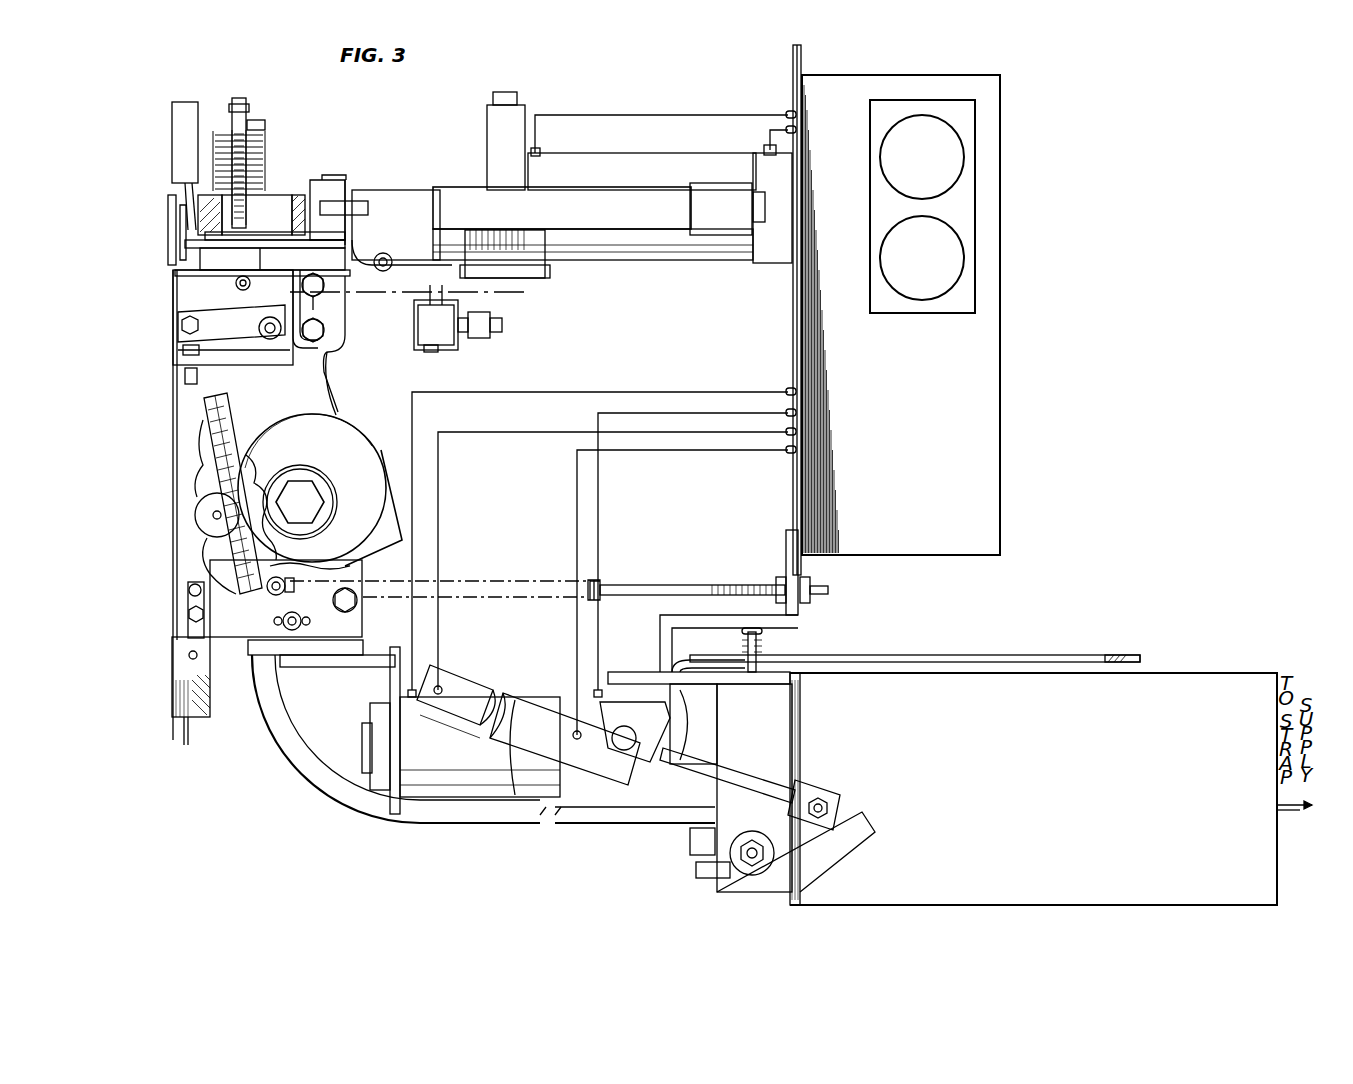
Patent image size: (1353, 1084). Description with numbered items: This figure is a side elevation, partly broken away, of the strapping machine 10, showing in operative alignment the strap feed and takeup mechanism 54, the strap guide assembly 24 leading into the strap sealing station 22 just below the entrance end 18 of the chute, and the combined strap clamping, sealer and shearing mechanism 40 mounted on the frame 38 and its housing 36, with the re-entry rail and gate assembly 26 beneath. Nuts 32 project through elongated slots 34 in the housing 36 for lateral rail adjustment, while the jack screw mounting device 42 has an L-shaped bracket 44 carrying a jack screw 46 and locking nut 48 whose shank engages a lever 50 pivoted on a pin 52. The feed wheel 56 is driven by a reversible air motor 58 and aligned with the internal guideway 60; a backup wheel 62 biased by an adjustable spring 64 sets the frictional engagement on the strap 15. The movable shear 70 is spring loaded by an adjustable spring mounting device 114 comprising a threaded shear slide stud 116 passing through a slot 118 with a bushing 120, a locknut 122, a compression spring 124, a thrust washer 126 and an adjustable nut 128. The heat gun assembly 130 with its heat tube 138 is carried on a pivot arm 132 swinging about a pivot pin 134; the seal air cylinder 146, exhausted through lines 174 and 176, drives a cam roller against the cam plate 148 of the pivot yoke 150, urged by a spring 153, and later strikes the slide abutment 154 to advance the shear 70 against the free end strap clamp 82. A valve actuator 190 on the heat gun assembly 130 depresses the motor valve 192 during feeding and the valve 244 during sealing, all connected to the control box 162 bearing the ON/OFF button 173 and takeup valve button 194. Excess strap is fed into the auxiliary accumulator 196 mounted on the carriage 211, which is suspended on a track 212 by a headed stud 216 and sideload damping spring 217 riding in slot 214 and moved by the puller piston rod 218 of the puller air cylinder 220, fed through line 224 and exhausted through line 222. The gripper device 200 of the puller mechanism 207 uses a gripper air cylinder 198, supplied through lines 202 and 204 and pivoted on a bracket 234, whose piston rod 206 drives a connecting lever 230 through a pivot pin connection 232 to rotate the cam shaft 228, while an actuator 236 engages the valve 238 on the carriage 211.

The machine 10 is at (108, 207).
The strap 15 is at (186, 185).
The entrance end 18 is at (178, 124).
The strap sealing station 22 is at (166, 185).
The strap guide assembly 24 is at (210, 426).
The re-entry rail and gate assembly 26 is at (168, 659).
The nuts 32 is at (184, 325).
The elongated slots 34 is at (180, 290).
The housing 36 is at (183, 419).
The frame 38 is at (347, 345).
The strap clamping, sealer and shearing mechanism 40 is at (335, 180).
The jack screw mounting device 42 is at (212, 310).
The L-shaped bracket 44 is at (242, 362).
The jack screw 46 is at (185, 378).
The locking nut 48 is at (183, 350).
The lever 50 is at (212, 335).
The pin 52 is at (270, 342).
The strap feed and takeup mechanism 54 is at (352, 428).
The feed wheel 56 is at (236, 507).
The reversible air motor 58 is at (308, 459).
The internal guideway 60 is at (238, 460).
The backup wheel 62 is at (212, 500).
The adjustable spring 64 is at (290, 572).
The movable shear 70 is at (360, 200).
The free end strap clamp 82 is at (166, 222).
The adjustable spring mounting device 114 is at (267, 160).
The threaded shear slide stud 116 is at (262, 205).
The slot 118 is at (300, 205).
The bushing 120 is at (275, 221).
The locknut 122 is at (212, 170).
The compression spring 124 is at (268, 150).
The thrust washer 126 is at (238, 125).
The adjustable nut 128 is at (250, 125).
The heat gun assembly 130 is at (665, 186).
The pivot arm 132 is at (548, 276).
The pivot pin 134 is at (508, 94).
The heat tube 138 is at (646, 194).
The seal air cylinder 146 is at (583, 160).
The cam plate 148 is at (352, 190).
The pivot yoke 150 is at (422, 224).
The spring 153 is at (364, 300).
The slide abutment 154 is at (350, 180).
The control box 162 is at (886, 411).
The ON/OFF button 173 is at (882, 122).
The air line 174 is at (660, 115).
The air line 176 is at (770, 130).
The valve actuator 190 is at (470, 334).
The valve 192 is at (442, 345).
The takeup valve button 194 is at (882, 250).
The auxiliary accumulator 196 is at (1014, 775).
The gripper air cylinder 198 is at (550, 681).
The gripper device 200 is at (800, 712).
The line 202 is at (577, 511).
The line 204 is at (438, 511).
The piston rod 206 is at (790, 768).
The puller mechanism 207 is at (480, 800).
The carriage 211 is at (738, 758).
The track 212 is at (1130, 655).
The slot 214 is at (812, 658).
The headed stud 216 is at (758, 652).
The sideload damping spring 217 is at (740, 657).
The puller piston rod 218 is at (710, 738).
The puller air cylinder 220 is at (478, 761).
The line 222 is at (398, 616).
The line 224 is at (600, 612).
The cam shaft 228 is at (729, 601).
The connecting lever 230 is at (820, 838).
The pivot pin connection 232 is at (858, 792).
The bracket 234 is at (648, 679).
The actuator 236 is at (696, 871).
The valve 238 is at (690, 845).
The valve 244 is at (434, 322).